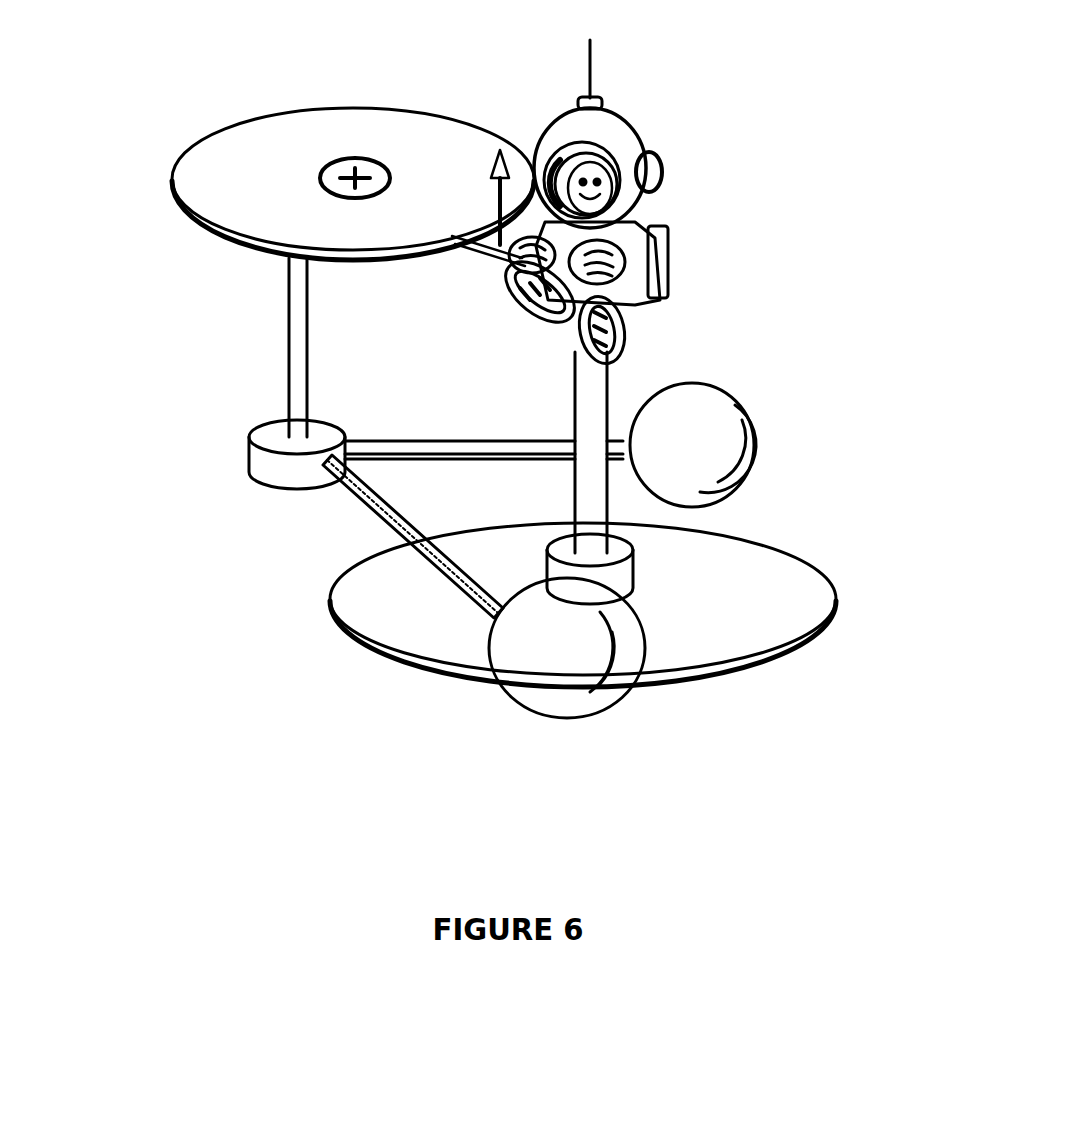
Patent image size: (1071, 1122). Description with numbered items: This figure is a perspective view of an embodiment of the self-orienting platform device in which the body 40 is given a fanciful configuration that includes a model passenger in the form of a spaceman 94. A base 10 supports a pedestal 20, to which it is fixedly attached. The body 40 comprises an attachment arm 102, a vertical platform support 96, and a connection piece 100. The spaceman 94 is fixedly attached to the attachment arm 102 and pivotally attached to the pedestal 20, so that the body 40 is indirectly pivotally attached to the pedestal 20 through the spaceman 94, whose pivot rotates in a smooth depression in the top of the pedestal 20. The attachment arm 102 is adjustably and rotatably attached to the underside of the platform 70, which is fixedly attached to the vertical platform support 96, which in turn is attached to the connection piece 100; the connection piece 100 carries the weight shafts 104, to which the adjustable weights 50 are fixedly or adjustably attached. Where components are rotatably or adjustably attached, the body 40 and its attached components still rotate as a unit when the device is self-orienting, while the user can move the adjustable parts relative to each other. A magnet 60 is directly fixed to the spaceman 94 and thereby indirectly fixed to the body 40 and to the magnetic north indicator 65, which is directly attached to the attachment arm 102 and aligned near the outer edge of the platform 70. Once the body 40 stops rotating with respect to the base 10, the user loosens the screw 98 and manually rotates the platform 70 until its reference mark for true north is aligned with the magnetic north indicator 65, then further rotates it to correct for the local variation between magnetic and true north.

The base 10 is at (368, 600).
The pedestal 20 is at (590, 398).
The body 40 is at (157, 232).
The adjustable weights 50 is at (745, 412).
The magnet 60 is at (512, 275).
The magnetic north indicator 65 is at (492, 175).
The platform 70 is at (213, 170).
The spaceman 94 is at (650, 128).
The vertical platform support 96 is at (298, 372).
The screw 98 is at (365, 157).
The connection piece 100 is at (262, 458).
The attachment arm 102 is at (495, 255).
The weight shafts 104 is at (417, 443).